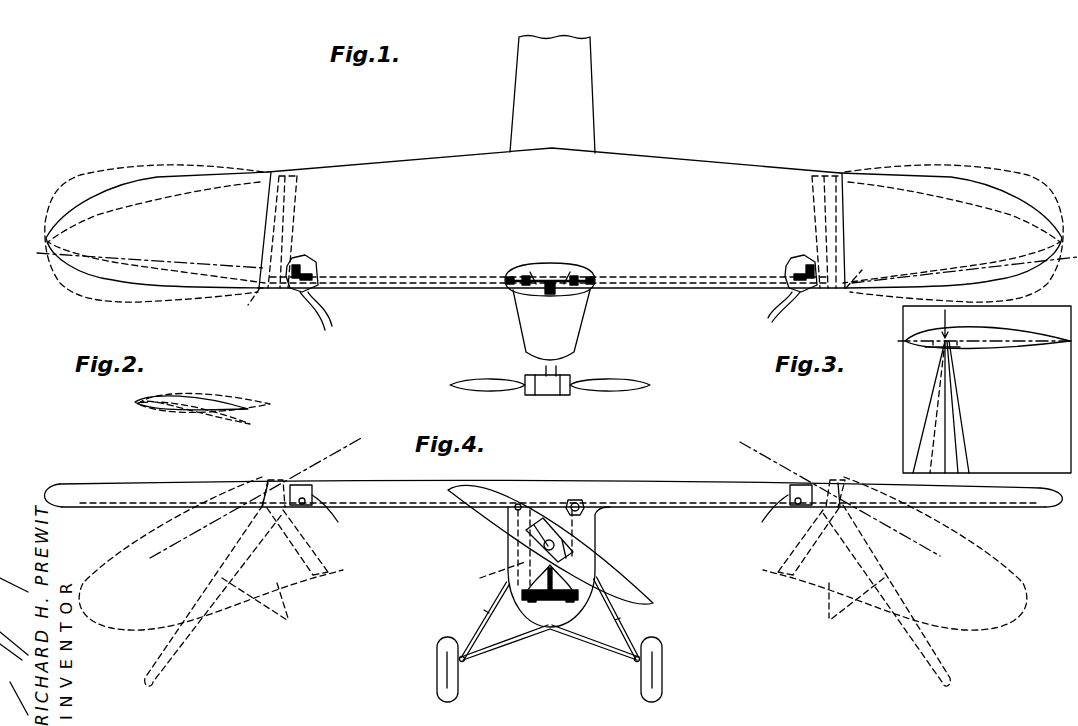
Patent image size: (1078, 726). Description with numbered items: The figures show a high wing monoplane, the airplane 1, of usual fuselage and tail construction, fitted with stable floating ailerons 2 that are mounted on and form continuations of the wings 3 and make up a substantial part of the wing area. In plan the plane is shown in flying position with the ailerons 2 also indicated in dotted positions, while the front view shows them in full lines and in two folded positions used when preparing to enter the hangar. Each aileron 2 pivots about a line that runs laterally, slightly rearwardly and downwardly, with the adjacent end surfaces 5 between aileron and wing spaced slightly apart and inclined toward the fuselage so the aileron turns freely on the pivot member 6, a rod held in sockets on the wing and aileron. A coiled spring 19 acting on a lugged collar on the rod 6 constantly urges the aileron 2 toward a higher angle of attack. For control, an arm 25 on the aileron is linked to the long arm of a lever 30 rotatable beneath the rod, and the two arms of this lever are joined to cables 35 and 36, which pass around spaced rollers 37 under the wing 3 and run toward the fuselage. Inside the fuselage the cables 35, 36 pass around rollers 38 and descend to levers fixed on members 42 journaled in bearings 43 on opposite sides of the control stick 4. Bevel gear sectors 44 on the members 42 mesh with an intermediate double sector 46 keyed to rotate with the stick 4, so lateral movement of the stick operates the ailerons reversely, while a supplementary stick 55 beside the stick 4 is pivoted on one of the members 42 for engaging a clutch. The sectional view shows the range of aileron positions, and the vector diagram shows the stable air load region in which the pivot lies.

In FIG. 1, the airplane 1 is at (600, 138).
In FIG. 4, the airplane 1 is at (503, 548).
In FIG. 1, the ailerons 2 is at (158, 172).
In FIG. 2, the ailerons 2 is at (205, 398).
In FIG. 3, the ailerons 2 is at (912, 336).
In FIG. 4, the ailerons 2 is at (122, 487).
In FIG. 1, the wings 3 is at (410, 160).
In FIG. 4, the wings 3 is at (360, 480).
In FIG. 1, the control stick 4 is at (560, 278).
In FIG. 4, the control stick 4 is at (560, 580).
In FIG. 1, the adjacent end surfaces 5 is at (268, 178).
In FIG. 4, the adjacent end surfaces 5 is at (256, 485).
In FIG. 1, the pivot member 6 is at (246, 308).
In FIG. 4, the pivot member 6 is at (537, 541).
In FIG. 4, the spring 19 is at (302, 505).
In FIG. 1, the lever or arm 25 is at (300, 268).
In FIG. 1, the lever 30 is at (312, 276).
In FIG. 1, the cable 35 is at (385, 300).
In FIG. 1, the cable 36 is at (405, 292).
In FIG. 1, the rollers 37 is at (550, 316).
In FIG. 4, the rollers 37 is at (550, 496).
In FIG. 1, the rollers 38 is at (512, 284).
In FIG. 4, the rollers 38 is at (520, 503).
In FIG. 4, the members 42 is at (556, 585).
In FIG. 4, the bearings 43 is at (530, 588).
In FIG. 1, the gear members of sector form 44 is at (536, 286).
In FIG. 1, the intermediate double sector 46 is at (550, 294).
In FIG. 4, the intermediate double sector 46 is at (553, 602).
In FIG. 1, the supplementary stick or lever 55 is at (530, 270).
In FIG. 4, the supplementary stick or lever 55 is at (492, 576).